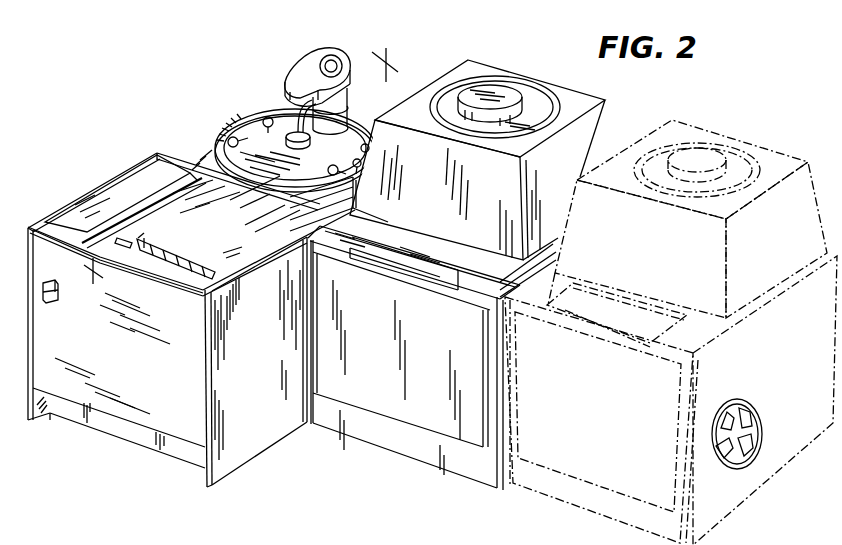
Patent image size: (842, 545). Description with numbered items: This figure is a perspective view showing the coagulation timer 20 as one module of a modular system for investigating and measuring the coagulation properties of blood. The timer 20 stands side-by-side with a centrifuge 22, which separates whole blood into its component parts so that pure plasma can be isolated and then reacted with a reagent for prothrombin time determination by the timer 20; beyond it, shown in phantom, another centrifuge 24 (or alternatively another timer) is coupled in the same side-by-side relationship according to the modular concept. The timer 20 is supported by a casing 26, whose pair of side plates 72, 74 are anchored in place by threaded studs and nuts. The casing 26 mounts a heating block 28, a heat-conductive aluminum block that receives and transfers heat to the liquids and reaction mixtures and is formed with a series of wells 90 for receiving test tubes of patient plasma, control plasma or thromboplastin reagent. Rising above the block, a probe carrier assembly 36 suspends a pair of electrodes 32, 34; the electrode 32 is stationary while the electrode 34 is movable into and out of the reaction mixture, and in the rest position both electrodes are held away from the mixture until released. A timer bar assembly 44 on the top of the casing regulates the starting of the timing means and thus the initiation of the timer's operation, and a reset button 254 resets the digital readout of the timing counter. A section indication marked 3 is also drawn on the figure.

The coagulation timer 20 is at (217, 102).
The centrifuge 22 is at (531, 72).
The another centrifuge 24 is at (693, 118).
The casing 26 is at (210, 489).
The heating block 28 is at (147, 146).
The stationary electrode 32 is at (314, 130).
The movable electrode 34 is at (291, 122).
The probe carrier assembly 36 is at (306, 53).
The timer bar assembly 44 is at (82, 197).
The side plate 72 is at (31, 227).
The side plate 74 is at (251, 450).
The wells 90 is at (348, 173).
The reset button 254 is at (168, 242).
The section line 3 is at (380, 60).